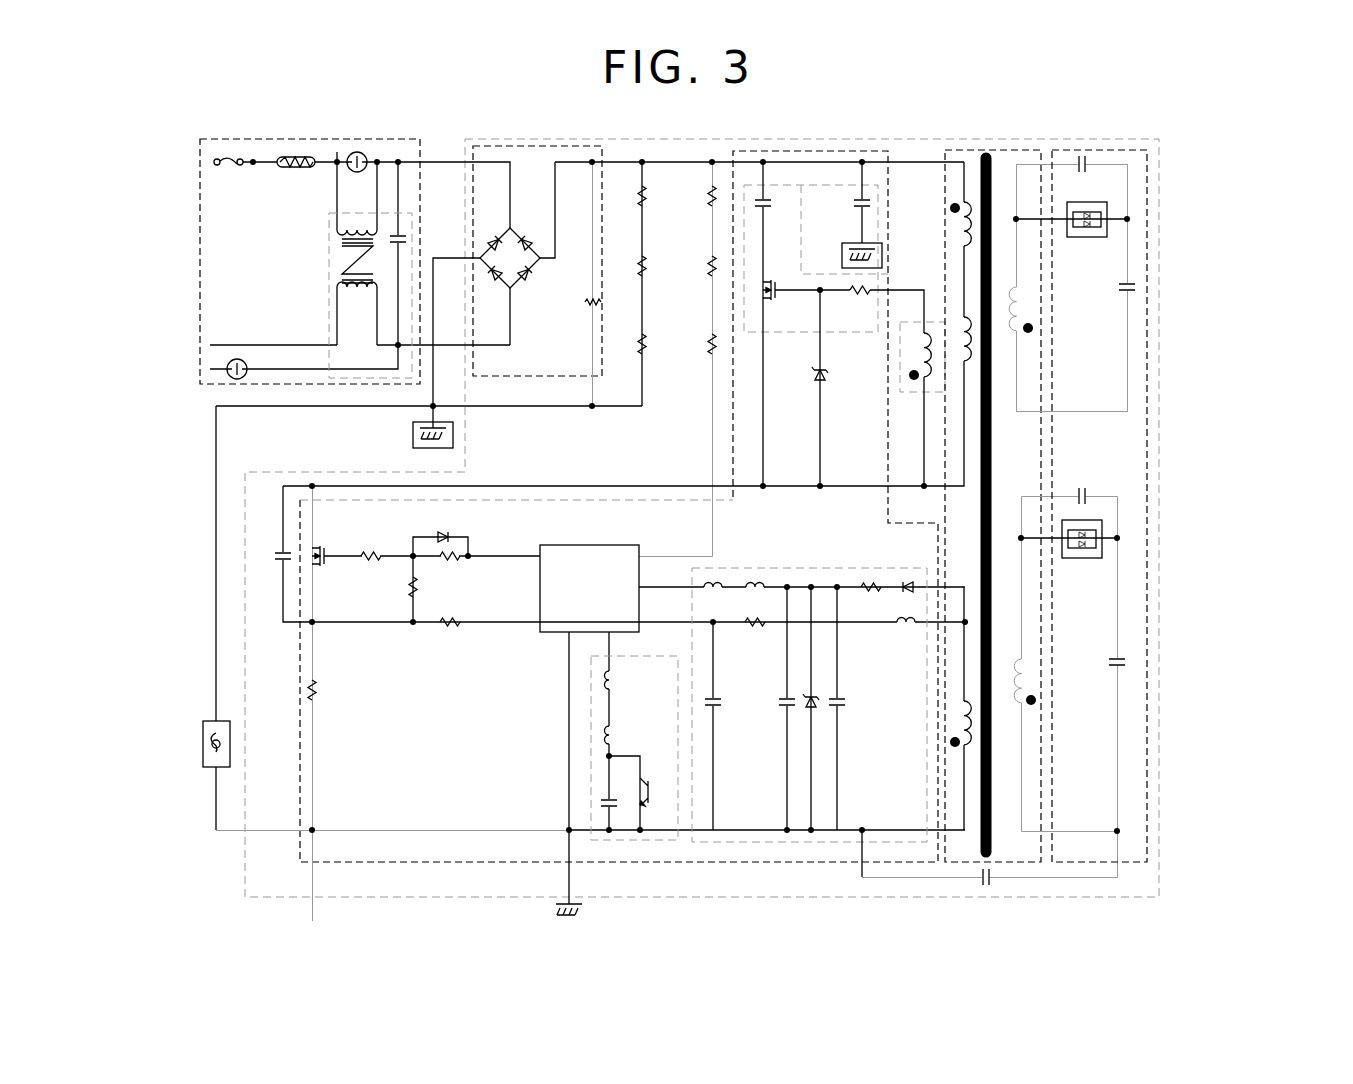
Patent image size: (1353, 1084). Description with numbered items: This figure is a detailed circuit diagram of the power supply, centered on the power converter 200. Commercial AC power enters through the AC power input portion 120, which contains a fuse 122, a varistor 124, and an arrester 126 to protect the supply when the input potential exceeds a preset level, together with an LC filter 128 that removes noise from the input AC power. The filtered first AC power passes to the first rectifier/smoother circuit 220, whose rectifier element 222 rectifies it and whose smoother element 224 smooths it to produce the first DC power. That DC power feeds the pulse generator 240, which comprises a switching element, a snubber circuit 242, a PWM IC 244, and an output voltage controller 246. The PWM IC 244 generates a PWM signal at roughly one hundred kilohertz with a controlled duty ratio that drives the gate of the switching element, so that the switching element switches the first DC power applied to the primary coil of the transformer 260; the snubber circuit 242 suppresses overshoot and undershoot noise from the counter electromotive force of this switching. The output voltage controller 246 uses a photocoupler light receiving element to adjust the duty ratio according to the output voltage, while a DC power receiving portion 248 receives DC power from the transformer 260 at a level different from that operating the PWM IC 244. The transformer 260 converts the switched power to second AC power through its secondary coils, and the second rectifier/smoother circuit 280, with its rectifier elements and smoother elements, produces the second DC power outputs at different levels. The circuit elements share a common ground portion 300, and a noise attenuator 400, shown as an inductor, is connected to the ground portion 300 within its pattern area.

The AC power input portion 120 is at (270, 139).
The fuse 122 is at (227, 170).
The varistor 124 is at (293, 170).
The arrester 126 is at (357, 152).
The LC filter 128 is at (329, 296).
The power converter 200 is at (688, 139).
The first rectifier/smoother circuit 220 is at (537, 146).
The rectifier element 222 is at (518, 290).
The smoother element 224 is at (590, 296).
The pulse generator 240 is at (810, 151).
The snubber circuit 242 is at (888, 276).
The pulse width modulator (PWM) IC 244 is at (642, 547).
The output voltage controller 246 is at (591, 750).
The DC power receiving portion 248 is at (818, 568).
The transformer 260 is at (992, 150).
The second rectifier/smoother circuit 280 is at (1099, 150).
The ground portion 300 is at (413, 437).
The noise attenuator 400 is at (203, 745).